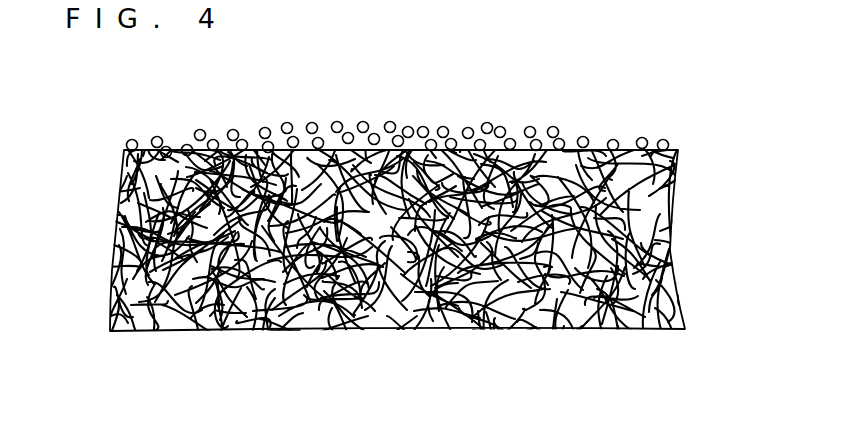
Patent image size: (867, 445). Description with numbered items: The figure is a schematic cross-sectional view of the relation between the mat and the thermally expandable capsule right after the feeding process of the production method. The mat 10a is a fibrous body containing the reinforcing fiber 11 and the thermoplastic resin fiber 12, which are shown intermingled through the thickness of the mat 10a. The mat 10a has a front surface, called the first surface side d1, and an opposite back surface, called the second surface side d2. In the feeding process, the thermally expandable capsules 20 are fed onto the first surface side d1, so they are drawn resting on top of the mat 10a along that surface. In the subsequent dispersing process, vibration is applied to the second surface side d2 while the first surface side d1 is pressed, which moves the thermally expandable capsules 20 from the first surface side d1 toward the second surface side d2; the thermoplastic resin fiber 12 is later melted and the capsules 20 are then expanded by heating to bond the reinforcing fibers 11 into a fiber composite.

The mat 10a is at (440, 249).
The reinforcing fiber 11 is at (668, 185).
The thermoplastic resin fiber 12 is at (743, 150).
The thermally expandable capsule 20 is at (443, 127).
The first surface side d1 is at (292, 119).
The second surface side d2 is at (291, 343).